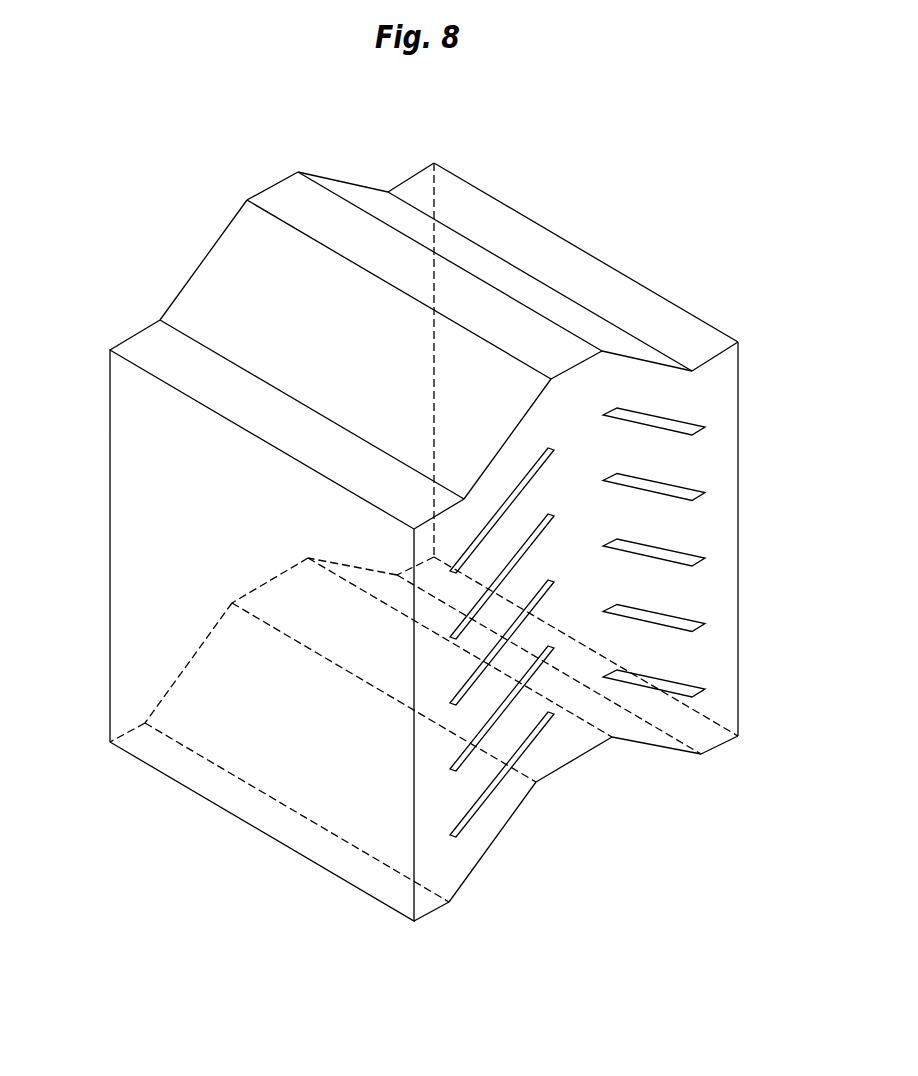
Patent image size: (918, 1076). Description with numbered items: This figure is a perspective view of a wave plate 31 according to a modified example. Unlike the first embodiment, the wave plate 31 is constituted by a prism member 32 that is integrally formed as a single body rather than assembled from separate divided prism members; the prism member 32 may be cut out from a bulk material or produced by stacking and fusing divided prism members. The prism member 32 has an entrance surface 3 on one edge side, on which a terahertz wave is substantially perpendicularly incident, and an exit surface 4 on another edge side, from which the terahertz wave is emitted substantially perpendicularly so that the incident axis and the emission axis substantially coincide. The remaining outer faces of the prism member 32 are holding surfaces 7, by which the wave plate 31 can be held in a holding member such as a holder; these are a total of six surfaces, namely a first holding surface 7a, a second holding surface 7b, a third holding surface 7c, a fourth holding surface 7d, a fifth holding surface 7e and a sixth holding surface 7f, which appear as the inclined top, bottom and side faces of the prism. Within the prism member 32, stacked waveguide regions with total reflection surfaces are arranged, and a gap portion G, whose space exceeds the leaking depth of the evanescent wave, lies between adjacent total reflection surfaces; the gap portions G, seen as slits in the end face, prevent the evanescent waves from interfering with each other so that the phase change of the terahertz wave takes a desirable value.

The entrance surface 3 is at (136, 513).
The wave plate 31 is at (595, 178).
The prism member 32 is at (718, 523).
The exit surface 4 is at (625, 297).
The holding surface 7 is at (408, 537).
The first holding surface 7a is at (348, 865).
The second holding surface 7b is at (143, 343).
The third holding surface 7c is at (563, 755).
The fourth holding surface 7d is at (282, 195).
The fifth holding surface 7e is at (485, 217).
The sixth holding surface 7f is at (670, 720).
The gap portion G is at (515, 493).